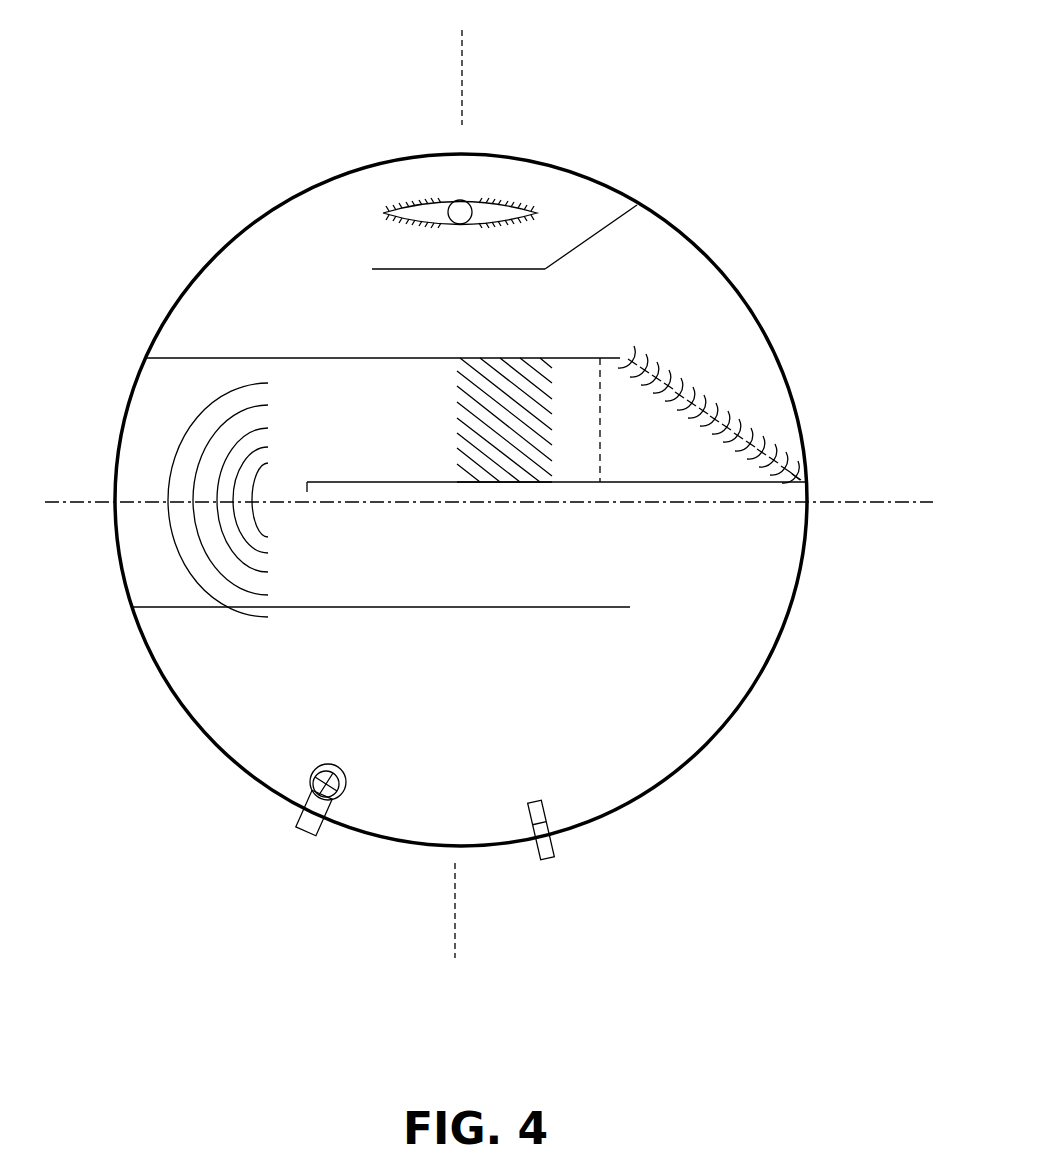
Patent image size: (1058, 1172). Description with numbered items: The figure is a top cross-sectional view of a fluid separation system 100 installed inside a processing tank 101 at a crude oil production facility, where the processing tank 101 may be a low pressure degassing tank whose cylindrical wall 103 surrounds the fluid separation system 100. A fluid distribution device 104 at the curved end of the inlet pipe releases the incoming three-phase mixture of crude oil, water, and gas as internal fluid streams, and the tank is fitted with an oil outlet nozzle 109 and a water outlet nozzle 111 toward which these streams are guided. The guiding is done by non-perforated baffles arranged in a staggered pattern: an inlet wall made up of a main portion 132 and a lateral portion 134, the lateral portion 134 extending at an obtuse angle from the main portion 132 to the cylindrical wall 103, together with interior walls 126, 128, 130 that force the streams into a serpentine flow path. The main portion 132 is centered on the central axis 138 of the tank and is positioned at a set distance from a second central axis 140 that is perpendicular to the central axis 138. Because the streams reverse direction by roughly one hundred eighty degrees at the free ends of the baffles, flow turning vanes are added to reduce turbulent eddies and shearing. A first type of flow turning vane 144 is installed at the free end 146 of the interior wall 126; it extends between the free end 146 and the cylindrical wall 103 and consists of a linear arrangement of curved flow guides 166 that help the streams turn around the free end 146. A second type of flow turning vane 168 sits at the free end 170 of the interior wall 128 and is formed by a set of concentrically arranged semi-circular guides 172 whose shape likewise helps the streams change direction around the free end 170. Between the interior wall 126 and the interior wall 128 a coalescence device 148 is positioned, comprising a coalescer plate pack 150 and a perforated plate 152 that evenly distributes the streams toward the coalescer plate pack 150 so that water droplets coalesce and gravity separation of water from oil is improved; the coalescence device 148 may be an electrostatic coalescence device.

The fluid separation system 100 is at (461, 481).
The processing tank 101 is at (461, 516).
The cylindrical wall 103 is at (708, 748).
The fluid distribution device 104 is at (520, 182).
The oil outlet nozzle 109 is at (295, 830).
The water outlet nozzle 111 is at (557, 852).
The interior wall 126 is at (200, 356).
The interior wall 128 is at (613, 484).
The interior wall 130 is at (430, 608).
The main portion 132 is at (455, 272).
The lateral portion 134 is at (601, 231).
The central axis 138 is at (455, 925).
The central axis 140 is at (857, 505).
The flow turning vane 144 is at (730, 398).
The free end 146 is at (617, 349).
The coalescence device 148 is at (544, 492).
The coalescer plate pack 150 is at (462, 430).
The perforated plate 152 is at (600, 440).
The flow guides 166 is at (765, 440).
The flow turning vane 168 is at (142, 582).
The free end 170 is at (307, 484).
The semi-circular guides 172 is at (213, 567).